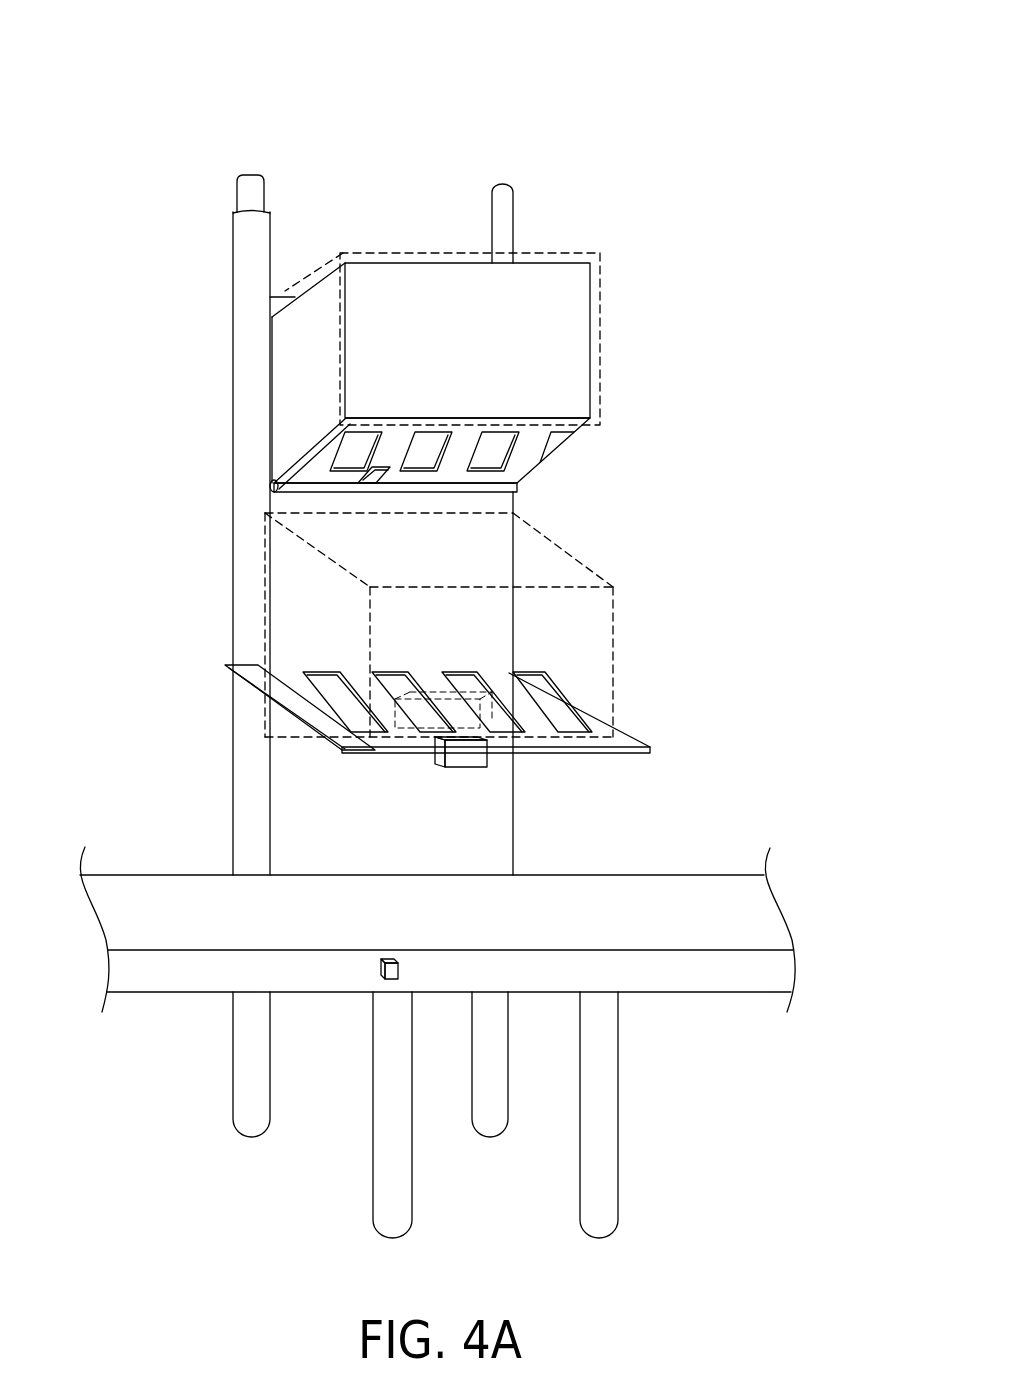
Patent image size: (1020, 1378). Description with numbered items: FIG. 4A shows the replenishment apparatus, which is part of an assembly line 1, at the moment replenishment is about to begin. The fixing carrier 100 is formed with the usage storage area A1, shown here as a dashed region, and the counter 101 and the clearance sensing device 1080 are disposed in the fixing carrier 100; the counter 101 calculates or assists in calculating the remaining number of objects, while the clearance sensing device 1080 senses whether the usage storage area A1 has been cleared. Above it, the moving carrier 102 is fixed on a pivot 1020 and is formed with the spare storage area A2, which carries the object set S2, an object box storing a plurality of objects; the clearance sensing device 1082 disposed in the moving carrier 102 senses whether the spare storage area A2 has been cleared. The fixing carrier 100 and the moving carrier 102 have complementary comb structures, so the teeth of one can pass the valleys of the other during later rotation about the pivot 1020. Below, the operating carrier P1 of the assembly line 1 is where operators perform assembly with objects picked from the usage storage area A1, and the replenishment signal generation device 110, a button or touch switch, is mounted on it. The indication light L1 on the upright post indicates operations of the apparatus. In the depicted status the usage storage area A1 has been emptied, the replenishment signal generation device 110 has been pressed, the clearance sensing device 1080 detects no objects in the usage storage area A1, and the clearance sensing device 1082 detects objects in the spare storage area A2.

The assembly line 1 is at (655, 80).
The indication light L1 is at (238, 190).
The spare storage area A2 is at (600, 328).
The object set S2 is at (483, 366).
The moving carrier 102 is at (540, 457).
The pivot 1020 is at (270, 485).
The clearance sensing device 1082 is at (372, 478).
The usage storage area A1 is at (613, 659).
The fixing carrier 100 is at (652, 750).
The counter 101 is at (435, 757).
The clearance sensing device 1080 is at (445, 705).
The operating carrier P1 is at (662, 888).
The replenishment signal generation device 110 is at (378, 967).